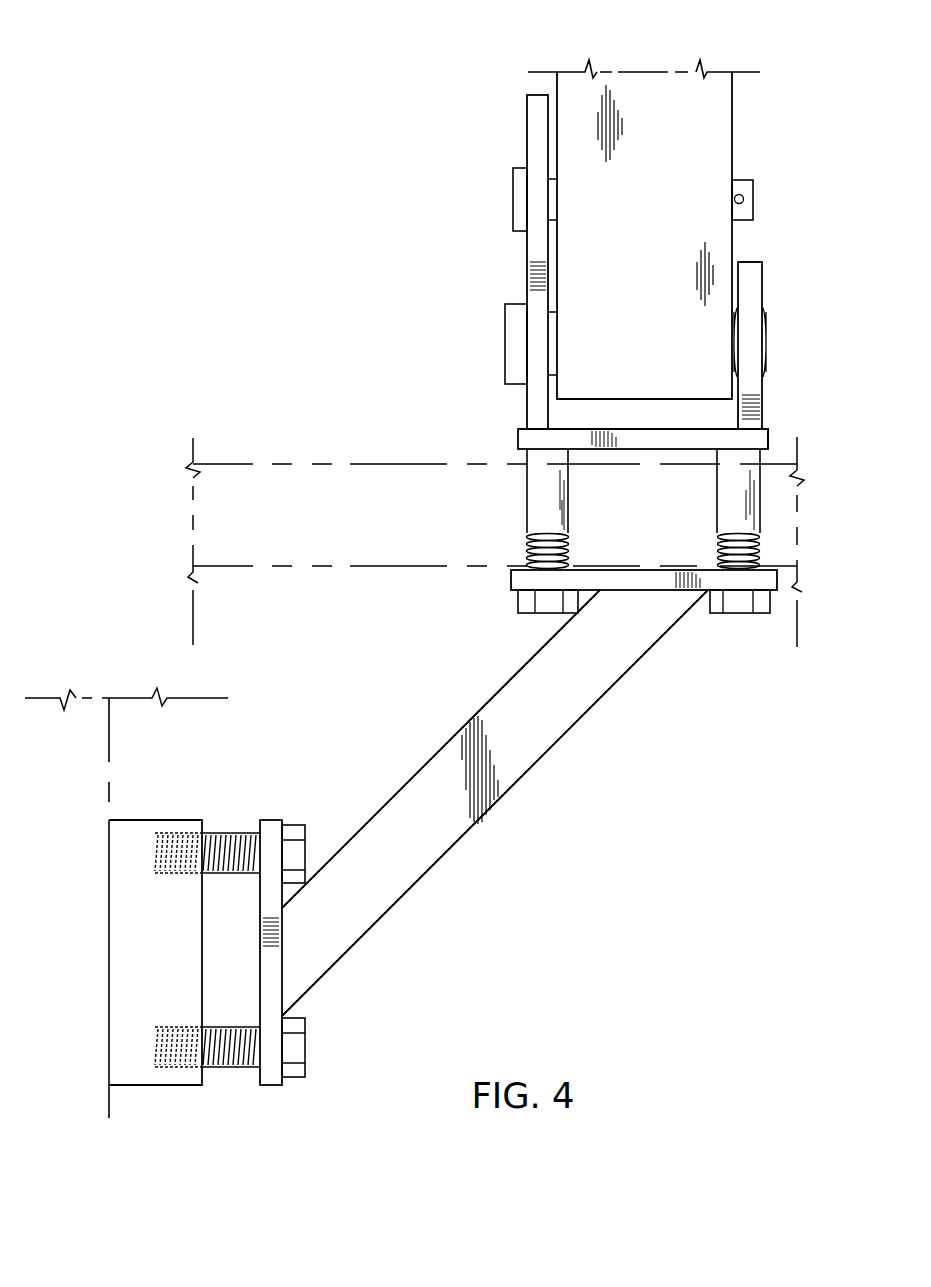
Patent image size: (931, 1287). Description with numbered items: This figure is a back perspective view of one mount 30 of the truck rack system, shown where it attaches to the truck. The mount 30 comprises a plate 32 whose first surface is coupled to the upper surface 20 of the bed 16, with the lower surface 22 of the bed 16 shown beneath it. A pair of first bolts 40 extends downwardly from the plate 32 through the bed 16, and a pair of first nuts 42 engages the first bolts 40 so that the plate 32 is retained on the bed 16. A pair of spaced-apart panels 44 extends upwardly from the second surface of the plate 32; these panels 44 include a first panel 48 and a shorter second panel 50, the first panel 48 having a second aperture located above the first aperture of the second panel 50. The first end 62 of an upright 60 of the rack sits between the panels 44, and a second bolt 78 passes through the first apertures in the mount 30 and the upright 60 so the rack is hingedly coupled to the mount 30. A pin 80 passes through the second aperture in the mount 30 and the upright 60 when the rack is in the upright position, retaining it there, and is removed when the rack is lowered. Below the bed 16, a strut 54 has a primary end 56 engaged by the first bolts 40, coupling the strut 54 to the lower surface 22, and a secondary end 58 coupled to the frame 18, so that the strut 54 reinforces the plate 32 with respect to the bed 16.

The bed 16 is at (238, 465).
The frame 18 is at (183, 1085).
The upper surface 20 is at (367, 464).
The lower surface 22 is at (360, 566).
The mount 30 is at (780, 437).
The plate 32 is at (563, 429).
The first bolt 40 is at (732, 520).
The first nut 42 is at (553, 613).
The panel 44 is at (527, 95).
The first panel 48 is at (748, 262).
The second panel 50 is at (542, 95).
The strut 54 is at (505, 800).
The primary end 56 is at (775, 588).
The secondary end 58 is at (270, 1085).
The upright 60 is at (732, 158).
The first end 62 is at (675, 399).
The second bolt 78 is at (505, 337).
The pin 80 is at (513, 193).